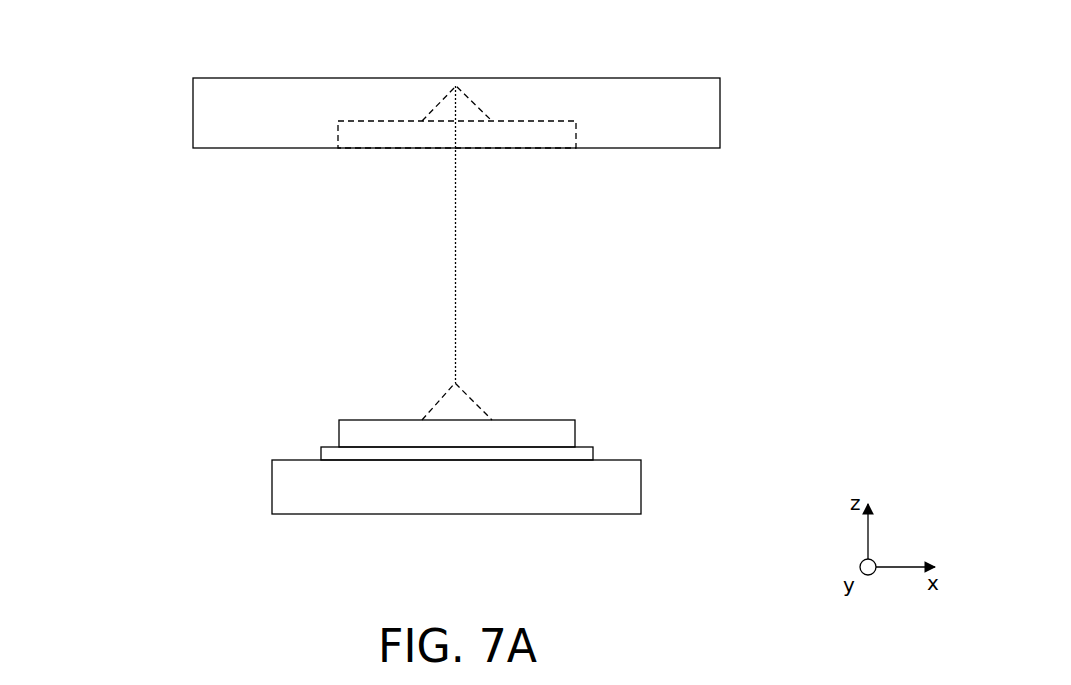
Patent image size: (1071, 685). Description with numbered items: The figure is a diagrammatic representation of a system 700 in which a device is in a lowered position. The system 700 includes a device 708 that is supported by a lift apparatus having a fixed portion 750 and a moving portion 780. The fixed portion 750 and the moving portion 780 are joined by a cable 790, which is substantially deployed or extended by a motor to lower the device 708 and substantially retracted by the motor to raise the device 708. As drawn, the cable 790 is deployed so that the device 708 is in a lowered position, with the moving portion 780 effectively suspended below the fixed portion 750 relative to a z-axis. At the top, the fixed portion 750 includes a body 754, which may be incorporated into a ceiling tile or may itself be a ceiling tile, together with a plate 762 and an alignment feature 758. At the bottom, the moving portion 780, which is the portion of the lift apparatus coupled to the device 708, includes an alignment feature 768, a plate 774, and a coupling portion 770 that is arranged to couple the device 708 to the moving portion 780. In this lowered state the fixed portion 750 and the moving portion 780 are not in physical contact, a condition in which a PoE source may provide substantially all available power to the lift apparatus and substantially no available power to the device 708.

The system 700 is at (114, 58).
The fixed portion 750 is at (254, 77).
The body 754 is at (720, 106).
The alignment feature 758 is at (463, 102).
The plate 762 is at (540, 136).
The cable 790 is at (457, 266).
The moving portion 780 is at (333, 441).
The alignment feature 768 is at (483, 401).
The plate 774 is at (557, 421).
The coupling portion 770 is at (594, 450).
The device 708 is at (641, 483).